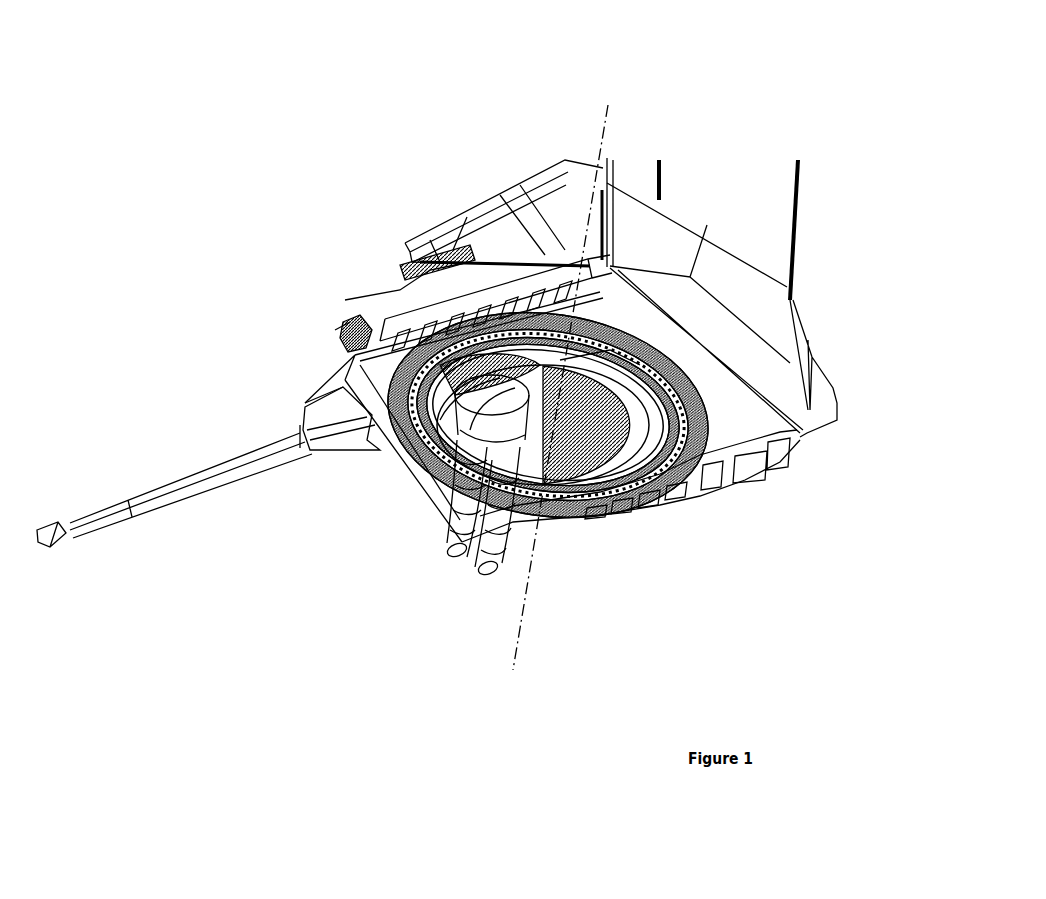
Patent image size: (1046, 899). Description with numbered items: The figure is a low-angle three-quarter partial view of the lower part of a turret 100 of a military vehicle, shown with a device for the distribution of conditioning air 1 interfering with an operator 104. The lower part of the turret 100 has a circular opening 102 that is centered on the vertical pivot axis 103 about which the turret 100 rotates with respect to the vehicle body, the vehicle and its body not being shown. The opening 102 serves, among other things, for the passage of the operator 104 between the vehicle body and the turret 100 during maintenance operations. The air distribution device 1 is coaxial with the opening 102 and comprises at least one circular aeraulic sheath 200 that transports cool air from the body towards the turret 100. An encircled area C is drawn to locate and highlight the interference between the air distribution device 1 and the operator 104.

The turret 100 is at (668, 80).
The encircled area C is at (390, 374).
The circular opening 102 is at (370, 487).
The operator 104 is at (460, 508).
The vertical pivot axis 103 is at (537, 558).
The circular aeraulic sheath 200 is at (650, 517).
The device for the distribution of conditioning air 1 is at (688, 498).